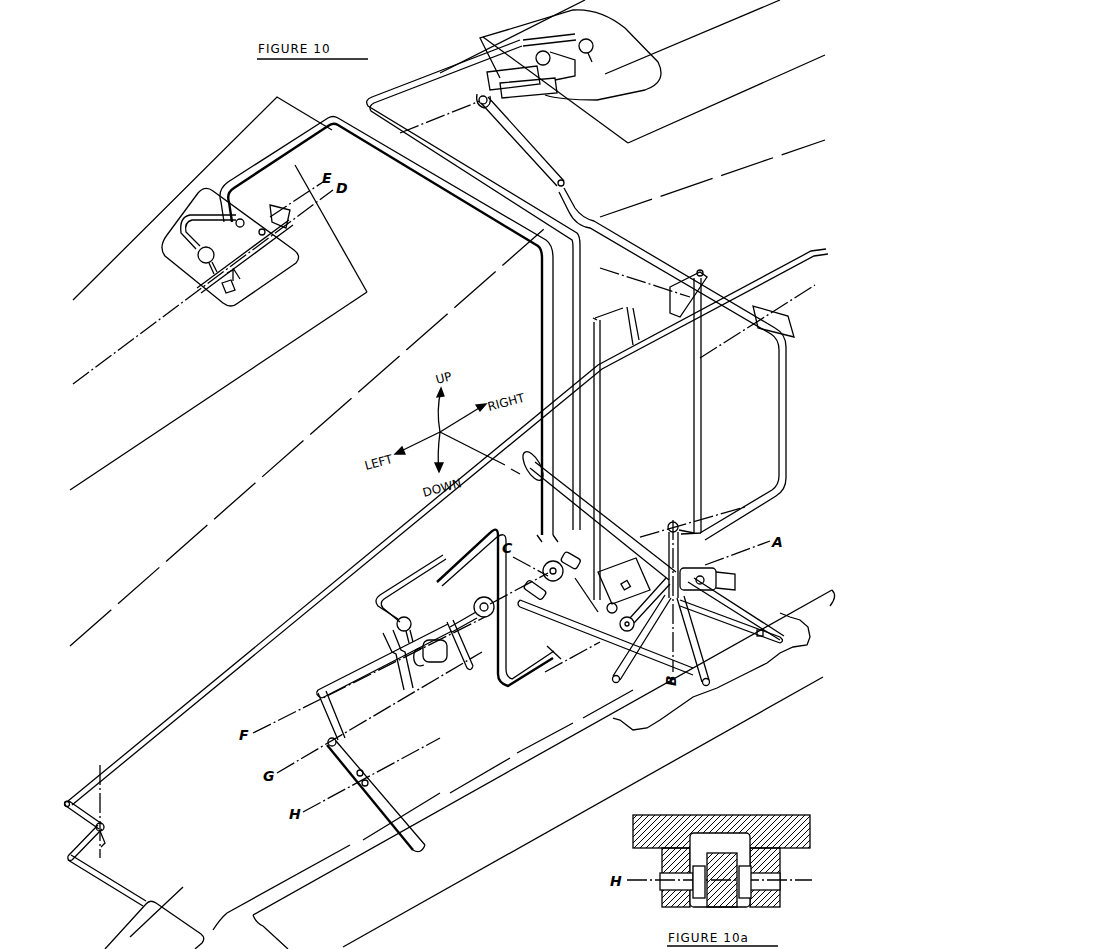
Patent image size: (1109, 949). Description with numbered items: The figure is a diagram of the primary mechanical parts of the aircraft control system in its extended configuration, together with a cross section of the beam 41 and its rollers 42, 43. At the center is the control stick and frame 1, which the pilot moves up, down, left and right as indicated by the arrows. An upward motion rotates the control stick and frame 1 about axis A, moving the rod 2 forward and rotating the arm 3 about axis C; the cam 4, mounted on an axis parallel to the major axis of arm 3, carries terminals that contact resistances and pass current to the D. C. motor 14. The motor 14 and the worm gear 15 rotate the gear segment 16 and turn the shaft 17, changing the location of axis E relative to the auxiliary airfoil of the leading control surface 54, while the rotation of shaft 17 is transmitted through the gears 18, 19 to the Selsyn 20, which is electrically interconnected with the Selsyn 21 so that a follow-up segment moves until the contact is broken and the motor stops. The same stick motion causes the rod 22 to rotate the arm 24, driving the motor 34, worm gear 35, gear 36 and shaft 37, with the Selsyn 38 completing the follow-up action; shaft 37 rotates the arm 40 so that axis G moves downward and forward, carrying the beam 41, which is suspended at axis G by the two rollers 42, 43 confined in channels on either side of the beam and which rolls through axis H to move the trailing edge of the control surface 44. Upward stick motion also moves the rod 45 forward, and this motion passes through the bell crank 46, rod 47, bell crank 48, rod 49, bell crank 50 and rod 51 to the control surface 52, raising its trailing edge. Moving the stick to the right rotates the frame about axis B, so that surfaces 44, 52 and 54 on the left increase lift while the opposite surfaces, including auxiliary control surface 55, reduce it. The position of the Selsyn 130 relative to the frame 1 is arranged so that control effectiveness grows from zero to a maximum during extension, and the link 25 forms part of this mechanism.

In FIG. 10, the control stick and frame 1 is at (608, 519).
In FIG. 10, the rod 2 is at (553, 623).
In FIG. 10, the arm 3 is at (543, 572).
In FIG. 10, the cam 4 is at (527, 584).
In FIG. 10, the D. C. motor 14 is at (198, 256).
In FIG. 10, the worm gear 15 is at (228, 288).
In FIG. 10, the gear segment 16 is at (243, 276).
In FIG. 10, the shaft 17 is at (258, 248).
In FIG. 10, the gear 18 is at (271, 226).
In FIG. 10, the gear 19 is at (259, 233).
In FIG. 10, the Selsyn 20 is at (233, 223).
In FIG. 10, the Selsyn 21 is at (625, 652).
In FIG. 10, the rod 22 is at (728, 627).
In FIG. 10, the arm 24 is at (624, 581).
In FIG. 10, the link 25 is at (645, 603).
In FIG. 10, the motor 34 is at (408, 618).
In FIG. 10, the worm gear 35 is at (418, 660).
In FIG. 10, the gear 36 is at (436, 658).
In FIG. 10, the shaft 37 is at (345, 668).
In FIG. 10, the Selsyn 38 is at (485, 617).
In FIG. 10, the arm 40 is at (336, 712).
In FIG. 10, the beam 41 is at (386, 791).
In FIG. 10A, the beam 41 is at (724, 905).
In FIG. 10, the roller 42 is at (366, 785).
In FIG. 10A, the roller 42 is at (699, 858).
In FIG. 10, the roller 43 is at (372, 766).
In FIG. 10A, the roller 43 is at (745, 860).
In FIG. 10, the control surface 44 is at (498, 853).
In FIG. 10, the rod 45 is at (726, 582).
In FIG. 10, the bell crank 46 is at (673, 520).
In FIG. 10, the rod 47 is at (696, 426).
In FIG. 10, the bell crank 48 is at (690, 268).
In FIG. 10, the rod 49 is at (292, 627).
In FIG. 10, the bell crank 50 is at (86, 823).
In FIG. 10, the rod 51 is at (106, 879).
In FIG. 10, the control surface 52 is at (187, 919).
In FIG. 10, the leading control surface 54 is at (334, 264).
In FIG. 10, the auxiliary control surface 55 is at (662, 127).
In FIG. 10, the Selsyn 130 is at (565, 565).